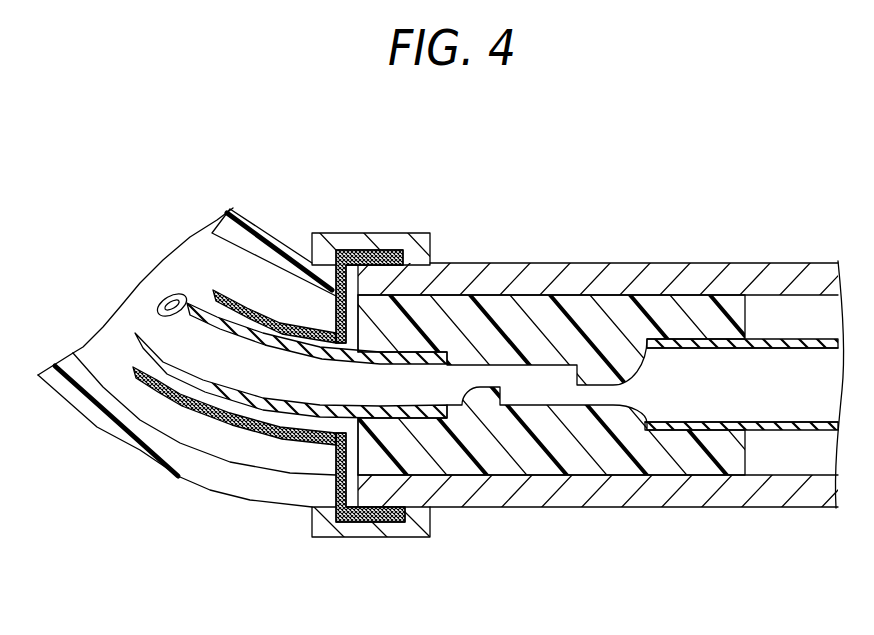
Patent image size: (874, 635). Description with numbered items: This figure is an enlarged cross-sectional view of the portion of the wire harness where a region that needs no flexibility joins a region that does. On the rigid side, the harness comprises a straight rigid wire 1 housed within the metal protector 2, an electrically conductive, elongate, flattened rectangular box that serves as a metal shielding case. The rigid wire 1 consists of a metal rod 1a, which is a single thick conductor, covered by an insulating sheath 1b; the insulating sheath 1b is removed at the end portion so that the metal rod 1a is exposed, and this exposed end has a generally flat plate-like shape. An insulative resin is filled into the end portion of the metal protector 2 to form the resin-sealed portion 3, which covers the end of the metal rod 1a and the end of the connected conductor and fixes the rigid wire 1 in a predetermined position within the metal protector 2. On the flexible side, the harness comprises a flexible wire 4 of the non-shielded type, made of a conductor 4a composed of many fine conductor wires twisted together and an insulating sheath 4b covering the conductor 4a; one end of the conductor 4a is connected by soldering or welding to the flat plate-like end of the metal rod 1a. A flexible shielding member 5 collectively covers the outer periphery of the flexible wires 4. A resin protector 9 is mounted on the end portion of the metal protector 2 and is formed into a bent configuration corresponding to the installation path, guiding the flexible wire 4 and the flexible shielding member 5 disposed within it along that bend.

The rigid wire 1 is at (741, 281).
The metal rod 1a is at (690, 377).
The insulating sheath 1b is at (697, 340).
The metal protector 2 is at (570, 280).
The resin-sealed portion 3 is at (503, 310).
The flexible wire 4 is at (487, 430).
The conductor 4a is at (233, 370).
The insulating sheath 4b is at (268, 407).
The flexible shielding member 5 is at (170, 400).
The resin protector 9 is at (277, 257).